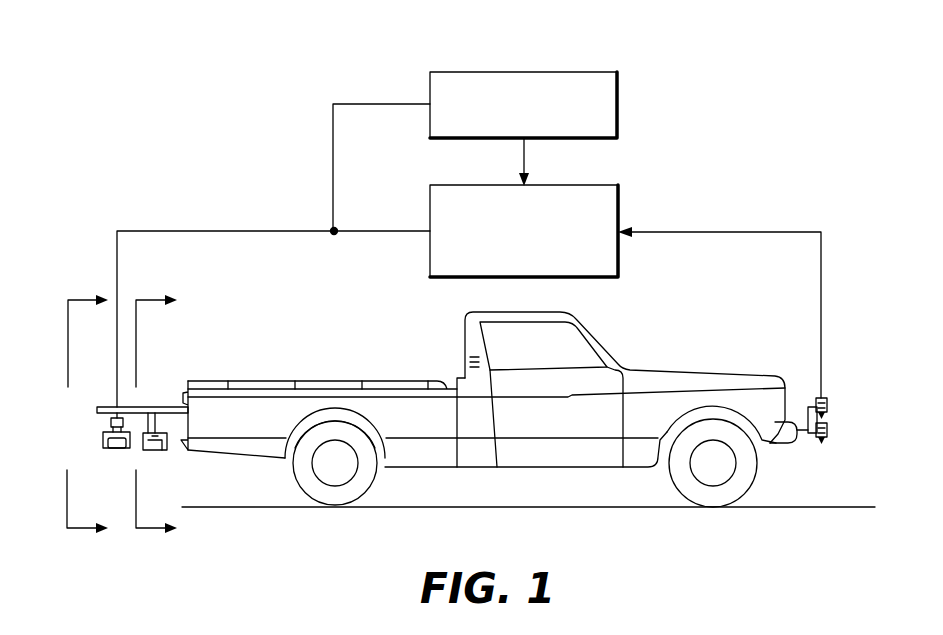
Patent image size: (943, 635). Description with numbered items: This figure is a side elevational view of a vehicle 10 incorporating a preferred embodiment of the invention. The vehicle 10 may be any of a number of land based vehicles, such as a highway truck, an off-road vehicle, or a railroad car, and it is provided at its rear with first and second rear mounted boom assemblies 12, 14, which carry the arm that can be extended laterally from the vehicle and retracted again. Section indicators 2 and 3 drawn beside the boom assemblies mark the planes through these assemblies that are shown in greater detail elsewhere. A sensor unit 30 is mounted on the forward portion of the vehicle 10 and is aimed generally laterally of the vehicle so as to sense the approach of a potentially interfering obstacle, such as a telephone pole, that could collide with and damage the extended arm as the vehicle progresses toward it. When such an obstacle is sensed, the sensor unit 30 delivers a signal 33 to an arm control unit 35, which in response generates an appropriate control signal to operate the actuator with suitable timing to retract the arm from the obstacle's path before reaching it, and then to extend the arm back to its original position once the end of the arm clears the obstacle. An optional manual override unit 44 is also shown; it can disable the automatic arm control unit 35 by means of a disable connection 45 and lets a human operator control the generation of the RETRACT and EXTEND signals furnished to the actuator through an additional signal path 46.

The vehicle 10 is at (687, 372).
The first rear mounted boom assembly 12 is at (161, 430).
The second rear mounted boom assembly 14 is at (95, 431).
The sensor unit 30 is at (828, 410).
The signal 33 is at (821, 287).
The arm control unit 35 is at (620, 256).
The manual override unit 44 is at (585, 71).
The disable connection 45 is at (526, 158).
The additional signal path 46 is at (352, 103).
The section line 2- 2 is at (156, 416).
The section line 3- 3 is at (87, 416).